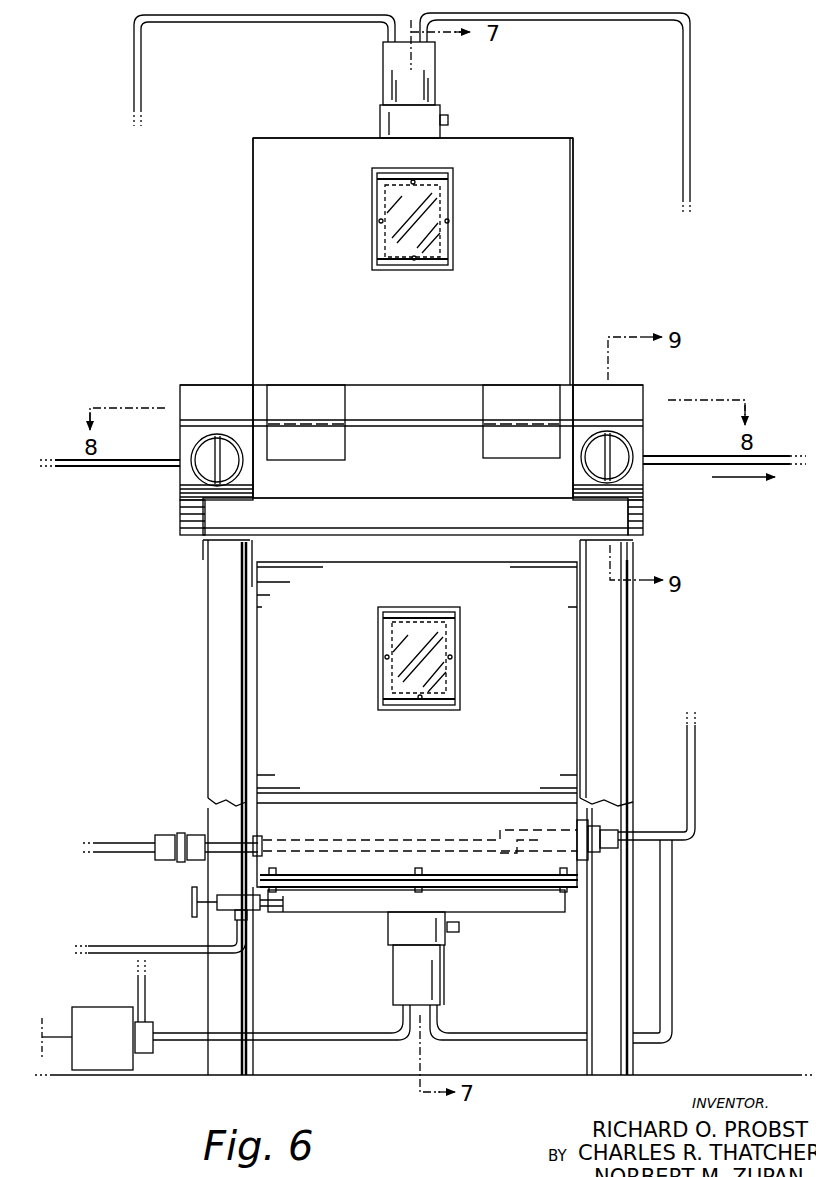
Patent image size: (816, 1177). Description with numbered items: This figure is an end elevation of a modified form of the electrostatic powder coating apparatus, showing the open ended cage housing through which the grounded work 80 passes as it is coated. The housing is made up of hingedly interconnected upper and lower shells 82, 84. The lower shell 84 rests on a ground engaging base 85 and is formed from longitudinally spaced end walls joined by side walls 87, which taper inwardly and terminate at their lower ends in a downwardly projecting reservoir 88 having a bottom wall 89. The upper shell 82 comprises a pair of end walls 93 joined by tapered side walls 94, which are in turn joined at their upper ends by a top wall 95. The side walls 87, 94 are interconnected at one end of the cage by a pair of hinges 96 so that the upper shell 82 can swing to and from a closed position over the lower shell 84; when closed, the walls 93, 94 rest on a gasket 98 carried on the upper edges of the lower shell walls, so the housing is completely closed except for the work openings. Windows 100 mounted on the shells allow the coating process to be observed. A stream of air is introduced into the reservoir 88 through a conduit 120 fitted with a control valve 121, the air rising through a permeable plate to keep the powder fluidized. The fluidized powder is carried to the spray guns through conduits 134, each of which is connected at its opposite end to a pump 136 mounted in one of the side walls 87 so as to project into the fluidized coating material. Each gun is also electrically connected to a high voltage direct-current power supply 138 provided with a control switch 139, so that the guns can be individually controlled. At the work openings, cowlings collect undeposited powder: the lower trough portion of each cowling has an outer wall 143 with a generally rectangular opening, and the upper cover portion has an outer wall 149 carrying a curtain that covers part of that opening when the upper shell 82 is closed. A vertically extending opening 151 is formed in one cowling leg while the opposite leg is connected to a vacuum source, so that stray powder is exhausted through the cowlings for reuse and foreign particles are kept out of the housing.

The grounded work 80 is at (717, 426).
The upper shell 82 is at (408, 292).
The lower shell 84 is at (246, 703).
The ground engaging base 85 is at (208, 633).
The side walls 87 is at (517, 733).
The reservoir 88 is at (387, 838).
The bottom wall 89 is at (498, 913).
The end walls 93 is at (253, 290).
The tapered side walls 94 is at (424, 328).
The top wall 95 is at (315, 138).
The hinges 96 is at (318, 385).
The gasket 98 is at (423, 428).
The windows 100 is at (453, 216).
The conduit 120 is at (127, 945).
The control valve 121 is at (237, 895).
The conduits 134 is at (618, 22).
The pump 136 is at (286, 22).
The high voltage D.C. power supply 138 is at (122, 1051).
The control switch 139 is at (143, 1053).
The outer wall 143 is at (180, 512).
The outer wall 149 is at (180, 395).
The vertically extending opening 151 is at (213, 462).